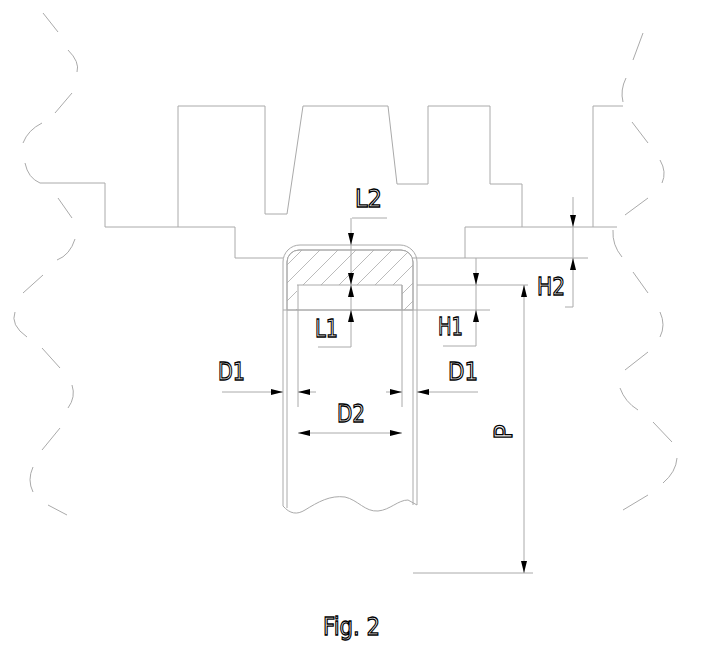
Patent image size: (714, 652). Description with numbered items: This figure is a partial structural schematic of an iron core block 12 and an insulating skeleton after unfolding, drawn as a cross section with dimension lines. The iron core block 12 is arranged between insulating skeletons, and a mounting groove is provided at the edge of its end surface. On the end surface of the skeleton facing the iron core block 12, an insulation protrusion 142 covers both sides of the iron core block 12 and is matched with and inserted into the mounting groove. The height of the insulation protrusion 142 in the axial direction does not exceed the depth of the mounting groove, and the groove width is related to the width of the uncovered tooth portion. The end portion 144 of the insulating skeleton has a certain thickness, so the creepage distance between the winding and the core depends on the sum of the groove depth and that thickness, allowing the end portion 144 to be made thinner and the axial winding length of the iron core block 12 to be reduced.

The iron core block 12 is at (328, 467).
The insulation protrusion 142 is at (293, 305).
The end portion of insulating skeleton 144 is at (317, 264).